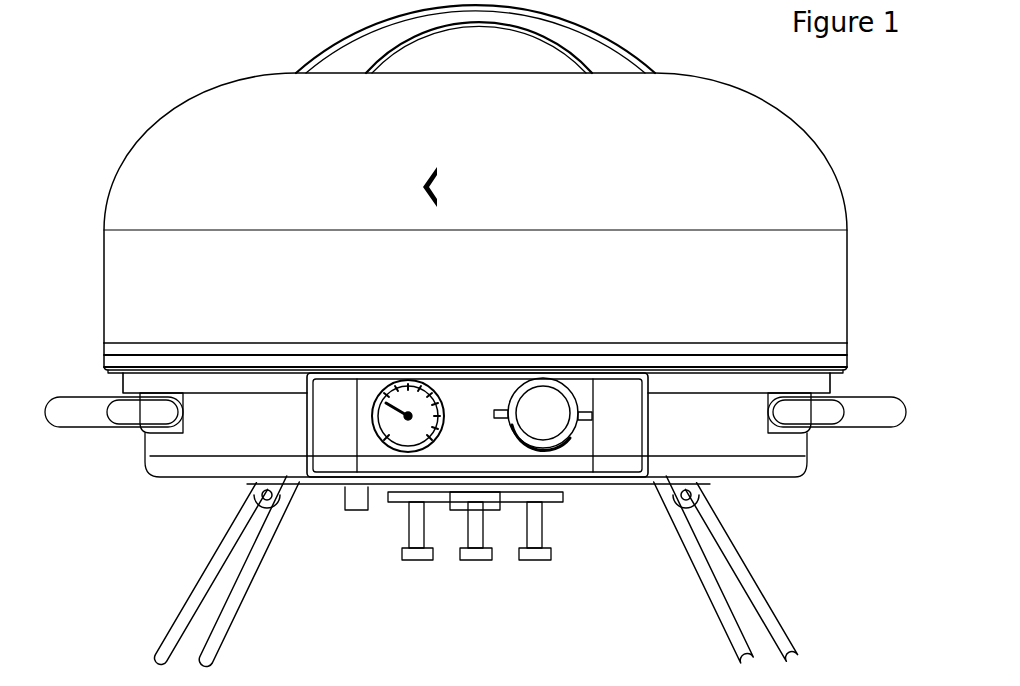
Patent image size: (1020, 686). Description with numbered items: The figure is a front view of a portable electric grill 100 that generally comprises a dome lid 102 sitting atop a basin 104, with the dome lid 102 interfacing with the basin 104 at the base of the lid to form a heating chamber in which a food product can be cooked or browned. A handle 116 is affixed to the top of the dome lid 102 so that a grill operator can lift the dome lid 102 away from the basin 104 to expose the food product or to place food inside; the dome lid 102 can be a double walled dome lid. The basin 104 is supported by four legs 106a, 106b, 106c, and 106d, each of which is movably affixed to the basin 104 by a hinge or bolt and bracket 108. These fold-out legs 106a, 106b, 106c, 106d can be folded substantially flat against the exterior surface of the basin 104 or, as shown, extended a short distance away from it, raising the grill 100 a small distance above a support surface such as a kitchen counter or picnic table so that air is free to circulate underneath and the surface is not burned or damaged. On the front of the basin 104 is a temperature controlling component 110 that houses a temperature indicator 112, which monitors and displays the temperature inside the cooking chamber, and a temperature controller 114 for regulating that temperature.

The portable electric grill 100 is at (128, 121).
The dome lid 102 is at (770, 160).
The basin 104 is at (743, 447).
The leg 106a is at (167, 642).
The leg 106b is at (227, 622).
The leg 106c is at (713, 577).
The leg 106d is at (770, 615).
The hinge or bolt and bracket 108 is at (263, 492).
The temperature controlling component 110 is at (480, 400).
The temperature indicator 112 is at (378, 412).
The temperature controller 114 is at (548, 400).
The handle 116 is at (337, 47).